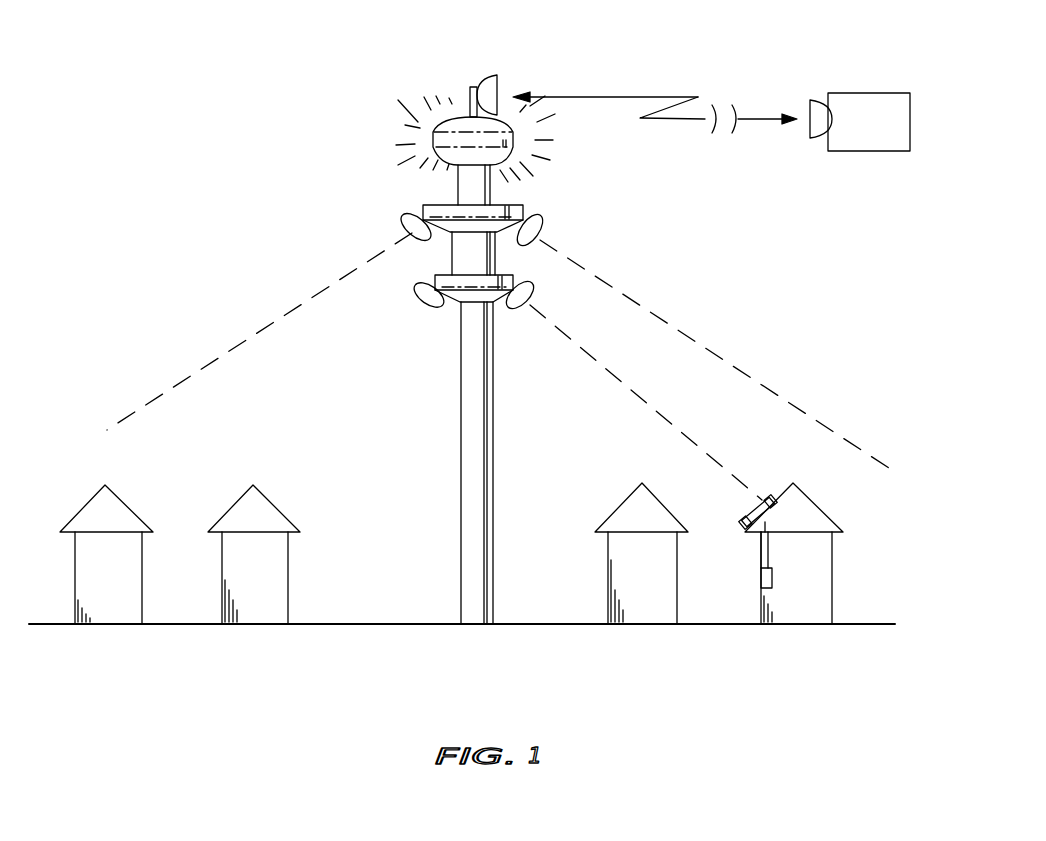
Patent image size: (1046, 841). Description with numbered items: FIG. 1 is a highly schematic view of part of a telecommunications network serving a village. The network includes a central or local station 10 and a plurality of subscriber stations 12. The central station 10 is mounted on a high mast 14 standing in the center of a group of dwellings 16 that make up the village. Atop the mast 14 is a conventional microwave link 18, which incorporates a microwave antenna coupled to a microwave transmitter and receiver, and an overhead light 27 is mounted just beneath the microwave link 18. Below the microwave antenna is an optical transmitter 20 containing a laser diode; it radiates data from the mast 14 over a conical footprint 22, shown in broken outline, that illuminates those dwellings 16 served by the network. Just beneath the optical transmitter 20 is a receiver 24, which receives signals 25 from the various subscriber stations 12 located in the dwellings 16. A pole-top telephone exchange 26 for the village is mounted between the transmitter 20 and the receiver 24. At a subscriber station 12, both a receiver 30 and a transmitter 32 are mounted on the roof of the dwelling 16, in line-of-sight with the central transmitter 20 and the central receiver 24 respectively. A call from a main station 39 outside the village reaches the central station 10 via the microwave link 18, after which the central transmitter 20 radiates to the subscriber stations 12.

The central station 10 is at (340, 166).
The subscriber station 12 is at (670, 470).
The mast 14 is at (463, 427).
The dwellings 16 is at (118, 586).
The microwave link 18 is at (493, 72).
The optical transmitter 20 is at (423, 207).
The conical footprint 22 is at (228, 348).
The receiver 24 is at (497, 305).
The signals 25 is at (626, 393).
The pole-top telephone exchange 26 is at (452, 253).
The overhead light 27 is at (510, 155).
The receiver 30 is at (745, 515).
The transmitter 32 is at (765, 500).
The main station 39 is at (865, 93).